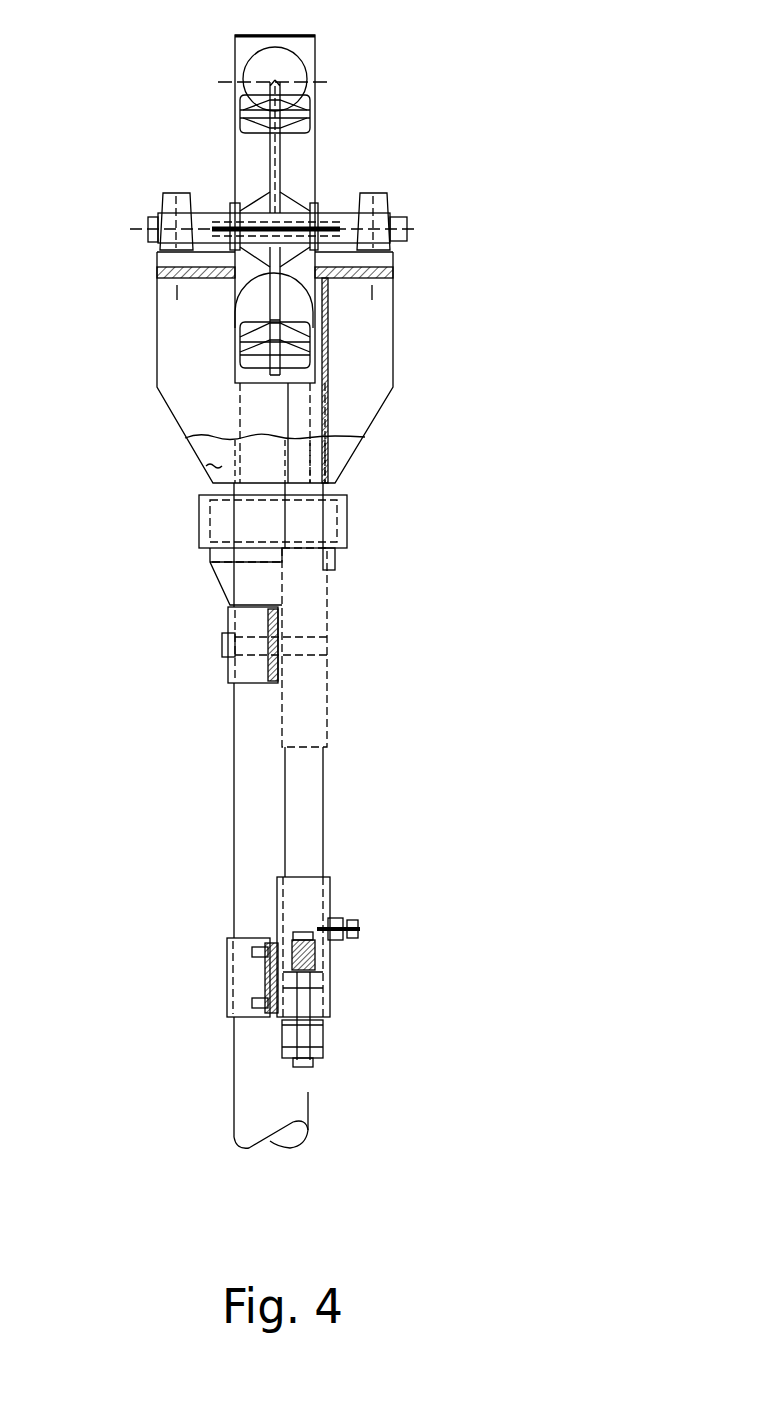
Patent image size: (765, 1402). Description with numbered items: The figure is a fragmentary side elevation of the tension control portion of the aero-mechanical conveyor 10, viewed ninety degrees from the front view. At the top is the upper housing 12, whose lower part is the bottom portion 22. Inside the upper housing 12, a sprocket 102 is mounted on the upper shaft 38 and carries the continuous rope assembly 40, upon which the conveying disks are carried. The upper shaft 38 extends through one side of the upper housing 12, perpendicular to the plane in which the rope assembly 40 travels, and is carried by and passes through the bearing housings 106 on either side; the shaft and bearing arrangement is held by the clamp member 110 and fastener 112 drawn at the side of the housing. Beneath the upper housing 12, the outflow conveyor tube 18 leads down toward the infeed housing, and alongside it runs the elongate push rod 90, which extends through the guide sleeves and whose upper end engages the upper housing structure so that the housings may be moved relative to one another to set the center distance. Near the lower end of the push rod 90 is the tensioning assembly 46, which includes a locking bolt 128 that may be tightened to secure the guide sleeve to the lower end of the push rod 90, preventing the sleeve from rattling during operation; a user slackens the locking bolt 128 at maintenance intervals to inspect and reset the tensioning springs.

The aero-mechanical conveyor 10 is at (388, 696).
The upper housing 12 is at (398, 327).
The outflow conveyor tube 18 is at (230, 1062).
The bottom portion 22 is at (392, 358).
The upper shaft 38 is at (285, 165).
The rope assembly 40 is at (315, 130).
The tensioning assembly 46 is at (334, 896).
The push rod 90 is at (325, 842).
The sprocket 102 is at (315, 55).
The bearing housings 106 is at (184, 193).
The clamp bar 110 is at (395, 207).
The bolt head 112 is at (160, 217).
The locking bolt 128 is at (343, 912).